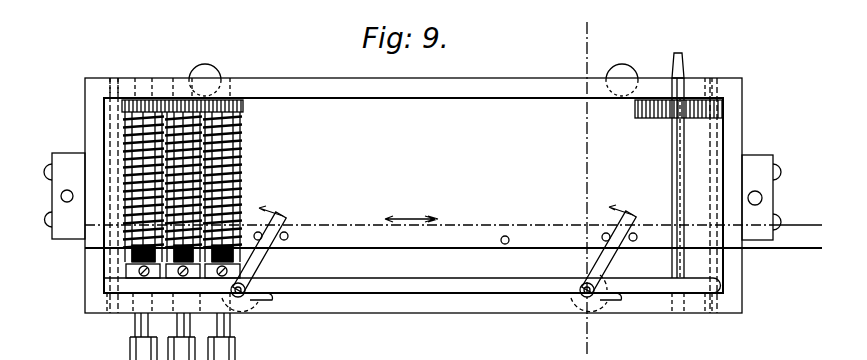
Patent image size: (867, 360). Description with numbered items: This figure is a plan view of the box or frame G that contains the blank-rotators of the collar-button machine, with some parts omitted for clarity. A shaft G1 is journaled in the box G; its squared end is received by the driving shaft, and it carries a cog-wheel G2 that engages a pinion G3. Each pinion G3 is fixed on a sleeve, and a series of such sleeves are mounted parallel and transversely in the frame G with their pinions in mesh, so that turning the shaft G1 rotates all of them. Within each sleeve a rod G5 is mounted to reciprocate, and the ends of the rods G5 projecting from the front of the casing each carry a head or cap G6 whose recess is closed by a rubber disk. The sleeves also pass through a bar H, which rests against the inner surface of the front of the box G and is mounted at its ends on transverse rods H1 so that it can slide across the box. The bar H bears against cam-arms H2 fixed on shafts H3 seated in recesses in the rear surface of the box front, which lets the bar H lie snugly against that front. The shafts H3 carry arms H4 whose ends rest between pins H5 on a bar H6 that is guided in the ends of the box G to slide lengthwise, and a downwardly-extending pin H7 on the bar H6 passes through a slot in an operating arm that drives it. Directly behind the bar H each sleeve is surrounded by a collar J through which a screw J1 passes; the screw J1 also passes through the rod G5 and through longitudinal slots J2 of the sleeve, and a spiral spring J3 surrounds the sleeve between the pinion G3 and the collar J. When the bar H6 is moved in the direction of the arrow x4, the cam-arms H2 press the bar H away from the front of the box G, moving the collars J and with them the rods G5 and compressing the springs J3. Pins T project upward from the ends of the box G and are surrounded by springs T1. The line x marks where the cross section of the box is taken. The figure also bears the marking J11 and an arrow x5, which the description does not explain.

The box or frame G is at (413, 188).
The shaft G1 is at (666, 165).
The cog-wheel G2 is at (645, 120).
The pinion G3 is at (244, 106).
The rod G5 is at (182, 326).
The head or cap G6 is at (177, 348).
The bar H is at (412, 285).
The transverse rods H1 is at (110, 208).
The cam-arms H2 is at (275, 300).
The shafts H3 is at (230, 296).
The arms H4 is at (442, 246).
The pins H5 is at (288, 236).
The bar H6 is at (453, 236).
The downwardly-extending pin H7 is at (509, 240).
The collar J is at (143, 278).
The screw J1 is at (183, 278).
The coil base J11 is at (221, 278).
The longitudinal slots J2 is at (138, 256).
The spiral spring J3 is at (128, 143).
The pins T is at (64, 196).
The springs T1 is at (762, 197).
The section line x is at (585, 181).
The arrow x4 is at (411, 213).
The direction arrow x5 is at (446, 205).